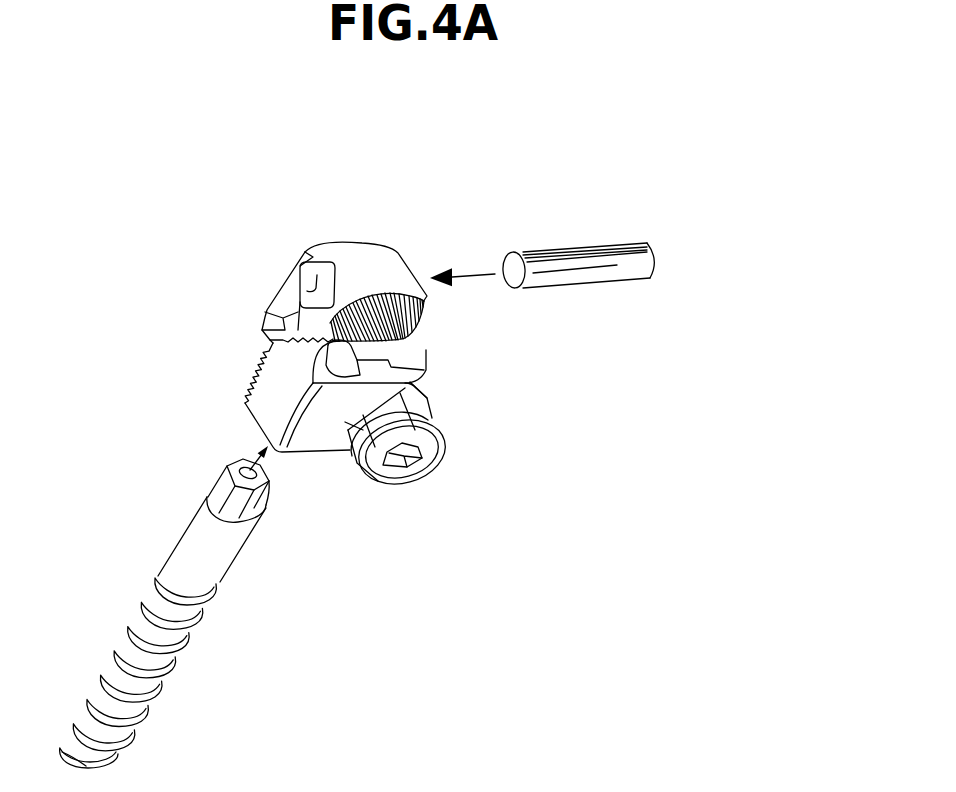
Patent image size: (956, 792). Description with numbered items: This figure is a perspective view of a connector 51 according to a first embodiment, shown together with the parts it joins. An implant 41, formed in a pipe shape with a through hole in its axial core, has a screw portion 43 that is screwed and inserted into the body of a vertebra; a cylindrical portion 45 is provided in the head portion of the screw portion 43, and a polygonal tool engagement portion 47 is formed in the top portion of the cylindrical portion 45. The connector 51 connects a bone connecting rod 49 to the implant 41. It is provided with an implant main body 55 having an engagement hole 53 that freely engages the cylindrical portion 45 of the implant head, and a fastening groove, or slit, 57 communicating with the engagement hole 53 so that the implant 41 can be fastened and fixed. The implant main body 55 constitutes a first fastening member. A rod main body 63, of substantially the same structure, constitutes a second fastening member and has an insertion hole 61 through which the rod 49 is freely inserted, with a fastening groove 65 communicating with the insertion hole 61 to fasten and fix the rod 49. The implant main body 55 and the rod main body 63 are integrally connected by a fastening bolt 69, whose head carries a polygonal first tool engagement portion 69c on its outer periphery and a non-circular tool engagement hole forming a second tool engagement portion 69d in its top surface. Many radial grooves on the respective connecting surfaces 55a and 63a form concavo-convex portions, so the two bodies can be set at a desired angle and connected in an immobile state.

The implant 41 is at (152, 538).
The screw portion 43 is at (210, 607).
The cylindrical portion 45 is at (225, 552).
The polygonal tool engagement portion 47 is at (257, 503).
The bone connecting rod 49 is at (592, 262).
The connector 51 is at (383, 222).
The engagement hole 53 is at (293, 370).
The implant main body 55 is at (275, 403).
The connecting surface 55a is at (273, 343).
The fastening groove (slit) 57 is at (400, 357).
The insertion hole 61 is at (305, 278).
The rod main body 63 is at (343, 235).
The connecting surface 63a is at (428, 327).
The fastening groove (slit) 65 is at (268, 327).
The fastening bolt 69 is at (430, 462).
The first tool engagement portion 69c is at (345, 422).
The second tool engagement portion 69d is at (411, 466).